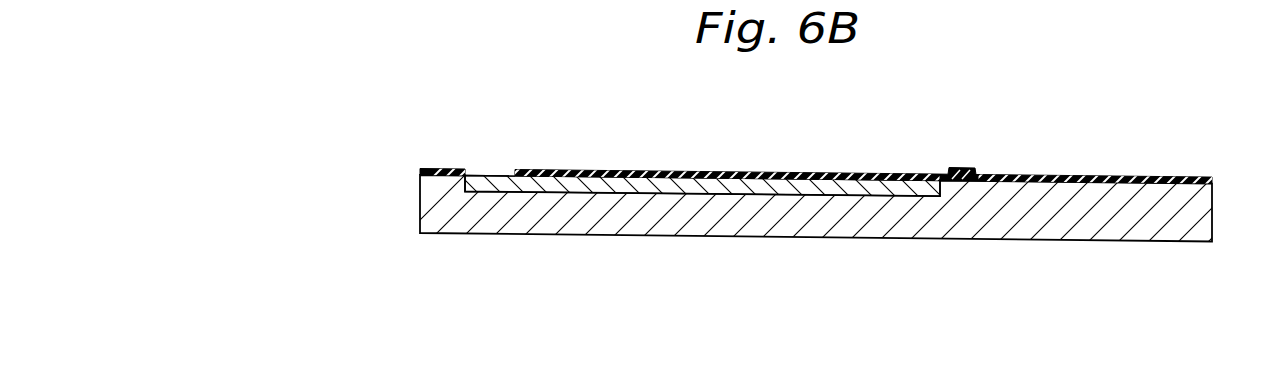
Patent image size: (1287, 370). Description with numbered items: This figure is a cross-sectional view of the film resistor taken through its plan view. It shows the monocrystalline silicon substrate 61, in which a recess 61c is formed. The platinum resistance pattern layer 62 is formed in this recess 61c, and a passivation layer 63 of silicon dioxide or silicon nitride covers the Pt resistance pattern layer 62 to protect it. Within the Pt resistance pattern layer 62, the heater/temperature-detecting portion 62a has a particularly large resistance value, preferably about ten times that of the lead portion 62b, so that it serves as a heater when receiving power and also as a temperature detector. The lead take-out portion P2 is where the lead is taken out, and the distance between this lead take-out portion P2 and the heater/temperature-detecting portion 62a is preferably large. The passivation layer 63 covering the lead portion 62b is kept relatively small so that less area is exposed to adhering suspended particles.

The monocrystalline silicon substrate 61 is at (1200, 228).
The recess 61c is at (776, 196).
The Pt resistance pattern layer 62 is at (918, 132).
The heater/temperature-detecting portion 62a is at (977, 151).
The lead portion 62b is at (842, 185).
The passivation layer 63 is at (1213, 184).
The lead take-out portion P2 is at (493, 166).